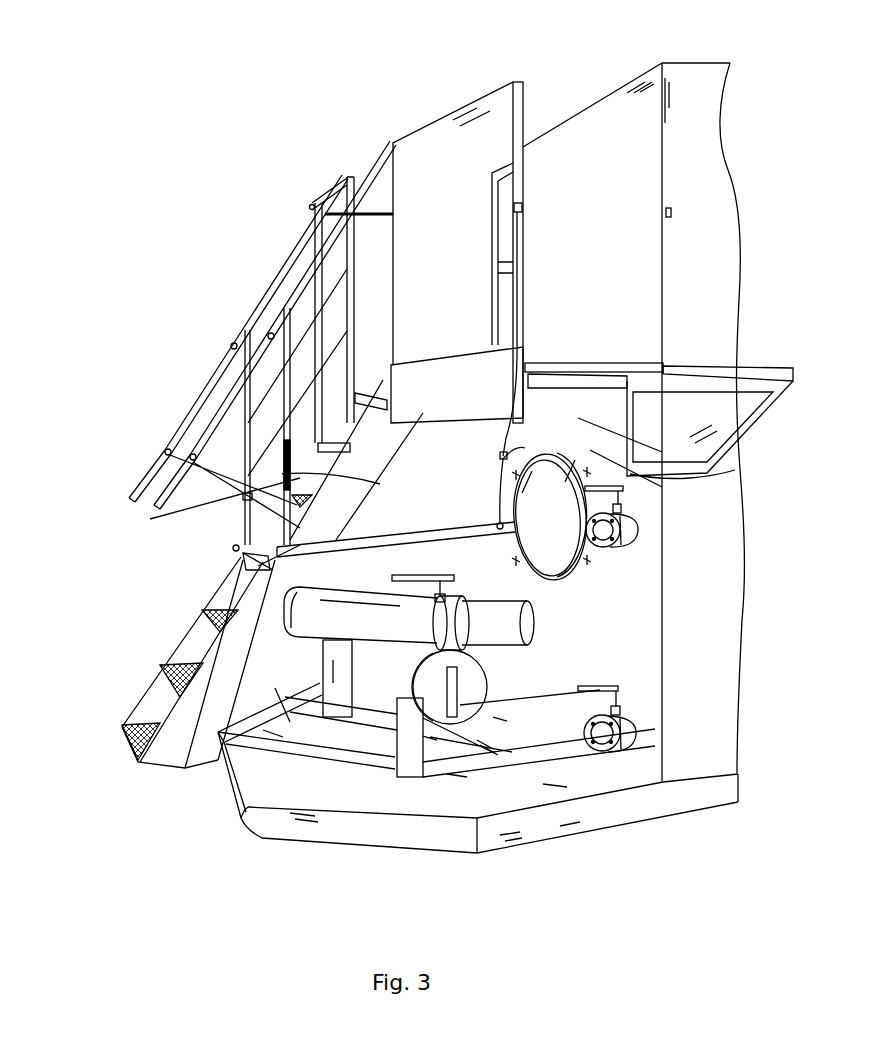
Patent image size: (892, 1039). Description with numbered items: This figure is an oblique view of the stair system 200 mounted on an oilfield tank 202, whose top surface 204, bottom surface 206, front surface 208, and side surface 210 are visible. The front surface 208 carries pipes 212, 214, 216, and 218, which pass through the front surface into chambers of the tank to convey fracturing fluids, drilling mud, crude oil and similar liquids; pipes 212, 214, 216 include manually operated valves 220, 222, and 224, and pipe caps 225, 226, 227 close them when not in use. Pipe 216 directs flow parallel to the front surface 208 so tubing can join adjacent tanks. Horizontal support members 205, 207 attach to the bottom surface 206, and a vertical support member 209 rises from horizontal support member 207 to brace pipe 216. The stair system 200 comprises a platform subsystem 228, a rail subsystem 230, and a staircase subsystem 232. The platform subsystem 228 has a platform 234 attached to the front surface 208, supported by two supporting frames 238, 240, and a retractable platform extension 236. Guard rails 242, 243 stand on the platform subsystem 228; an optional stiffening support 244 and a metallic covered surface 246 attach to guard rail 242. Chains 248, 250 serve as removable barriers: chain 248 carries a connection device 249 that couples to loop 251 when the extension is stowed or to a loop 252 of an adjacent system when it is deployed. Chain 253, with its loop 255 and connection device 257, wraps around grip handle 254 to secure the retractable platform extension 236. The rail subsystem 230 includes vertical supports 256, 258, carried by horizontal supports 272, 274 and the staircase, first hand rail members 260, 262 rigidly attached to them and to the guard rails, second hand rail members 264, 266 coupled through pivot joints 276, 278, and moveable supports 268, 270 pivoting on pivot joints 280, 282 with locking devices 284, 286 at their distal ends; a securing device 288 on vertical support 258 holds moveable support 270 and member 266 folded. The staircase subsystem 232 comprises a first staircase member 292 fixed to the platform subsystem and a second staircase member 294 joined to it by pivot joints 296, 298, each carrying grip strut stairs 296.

The stair system 200 is at (162, 99).
The oilfield tank 202 is at (732, 117).
The top surface 204 is at (692, 56).
The horizontal support member 205 is at (293, 843).
The bottom surface 206 is at (698, 788).
The horizontal support member 207 is at (412, 810).
The front surface 208 is at (603, 242).
The vertical support member 209 is at (393, 758).
The side surface 210 is at (714, 642).
The pipe 212 is at (633, 560).
The pipe 214 is at (630, 752).
The pipe 216 is at (534, 622).
The pipe 218 is at (581, 567).
The manually operated valve 220 is at (628, 500).
The manually operated valve 222 is at (620, 692).
The manually operated valve 224 is at (450, 576).
The pipe cap 225 is at (636, 538).
The pipe cap 226 is at (489, 687).
The pipe cap 227 is at (628, 727).
The platform subsystem 228 is at (650, 349).
The rail subsystem 230 is at (156, 264).
The staircase subsystem 232 is at (115, 623).
The platform 234 is at (549, 358).
The retractable platform extension 236 is at (768, 368).
The supporting frame 238 is at (562, 387).
The supporting frame 240 is at (420, 433).
The guard rail 242 is at (508, 83).
The guard rail 243 is at (342, 192).
The stiffening support 244 is at (490, 296).
The covered surface 246 is at (463, 214).
The chain 248 is at (513, 368).
The connection device 249 is at (505, 437).
The chain 250 is at (378, 212).
The loop 251 is at (668, 220).
The loop 252 is at (310, 205).
The chain 253 is at (498, 478).
The grip handle 254 is at (675, 474).
The loop 255 is at (497, 455).
The vertical support 256 is at (255, 412).
The connection device 257 is at (496, 524).
The vertical support 258 is at (277, 437).
The first hand rail member 260 is at (285, 262).
The first hand rail member 262 is at (330, 238).
The second hand rail member 264 is at (230, 430).
The second hand rail member 266 is at (215, 445).
The moveable support 268 is at (140, 472).
The moveable support 270 is at (158, 506).
The horizontal support 272 is at (392, 550).
The horizontal support 274 is at (390, 581).
The pivot joint 276 is at (232, 344).
The pivot joint 278 is at (268, 333).
The pivot joint 280 is at (245, 500).
The pivot joint 282 is at (236, 546).
The locking device 284 is at (176, 470).
The locking device 286 is at (166, 450).
The securing device 288 is at (352, 478).
The first staircase member 292 is at (360, 505).
The second staircase member 294 is at (168, 773).
The stairs 296 is at (243, 556).
The pivot joint 298 is at (232, 580).